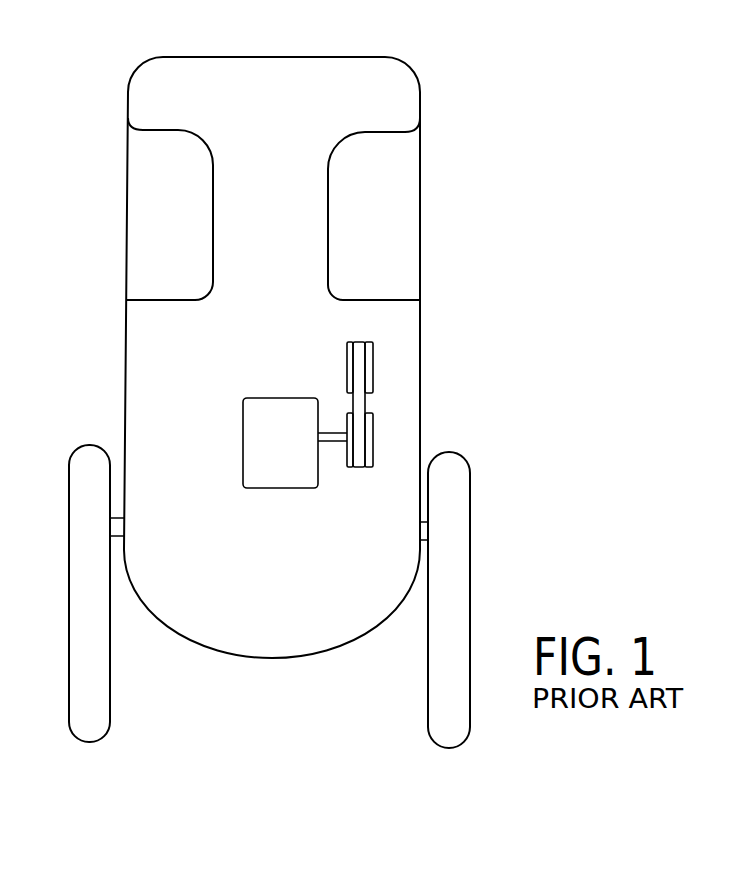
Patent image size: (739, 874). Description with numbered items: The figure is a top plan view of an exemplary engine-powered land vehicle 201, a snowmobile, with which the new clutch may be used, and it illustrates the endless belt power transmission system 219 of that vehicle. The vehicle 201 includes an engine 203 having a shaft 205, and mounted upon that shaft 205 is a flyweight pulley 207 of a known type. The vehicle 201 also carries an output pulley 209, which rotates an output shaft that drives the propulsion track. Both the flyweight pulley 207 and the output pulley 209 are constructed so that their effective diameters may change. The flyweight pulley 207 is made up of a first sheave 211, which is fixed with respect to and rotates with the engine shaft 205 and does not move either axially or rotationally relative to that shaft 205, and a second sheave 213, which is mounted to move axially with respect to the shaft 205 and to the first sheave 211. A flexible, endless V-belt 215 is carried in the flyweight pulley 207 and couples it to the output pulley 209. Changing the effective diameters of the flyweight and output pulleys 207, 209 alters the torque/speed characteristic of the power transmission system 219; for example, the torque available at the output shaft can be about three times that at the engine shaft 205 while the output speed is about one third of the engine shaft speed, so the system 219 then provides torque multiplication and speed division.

The engine-powered vehicle 201 is at (421, 226).
The engine 203 is at (243, 424).
The shaft 205 is at (333, 447).
The flyweight pulley 207 is at (366, 500).
The output pulley 209 is at (303, 370).
The first sheave 211 is at (349, 468).
The second sheave 213 is at (373, 437).
The V-belt 215 is at (368, 407).
The power transmission system 219 is at (434, 306).